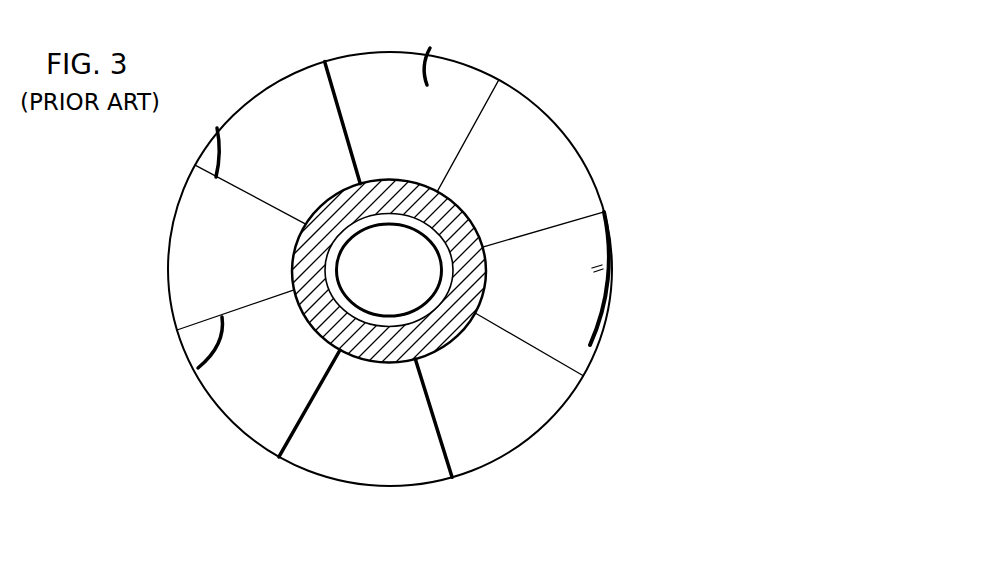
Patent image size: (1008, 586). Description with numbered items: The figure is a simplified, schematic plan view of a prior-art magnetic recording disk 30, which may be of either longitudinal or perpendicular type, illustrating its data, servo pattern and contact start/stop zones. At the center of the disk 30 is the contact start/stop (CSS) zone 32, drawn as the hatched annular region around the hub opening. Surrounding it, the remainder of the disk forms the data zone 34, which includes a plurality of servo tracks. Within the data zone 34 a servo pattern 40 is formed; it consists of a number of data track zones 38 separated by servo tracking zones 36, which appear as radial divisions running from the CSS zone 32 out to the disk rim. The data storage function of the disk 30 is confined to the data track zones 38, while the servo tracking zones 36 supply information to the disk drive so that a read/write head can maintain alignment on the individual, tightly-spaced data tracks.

The magnetic recording disk 30 is at (562, 93).
The contact start/stop (CSS) zone 32 is at (480, 288).
The data zone 34 is at (500, 383).
The servo tracking zones 36 is at (337, 122).
The data track zones 38 is at (308, 97).
The servo pattern 40 is at (242, 256).